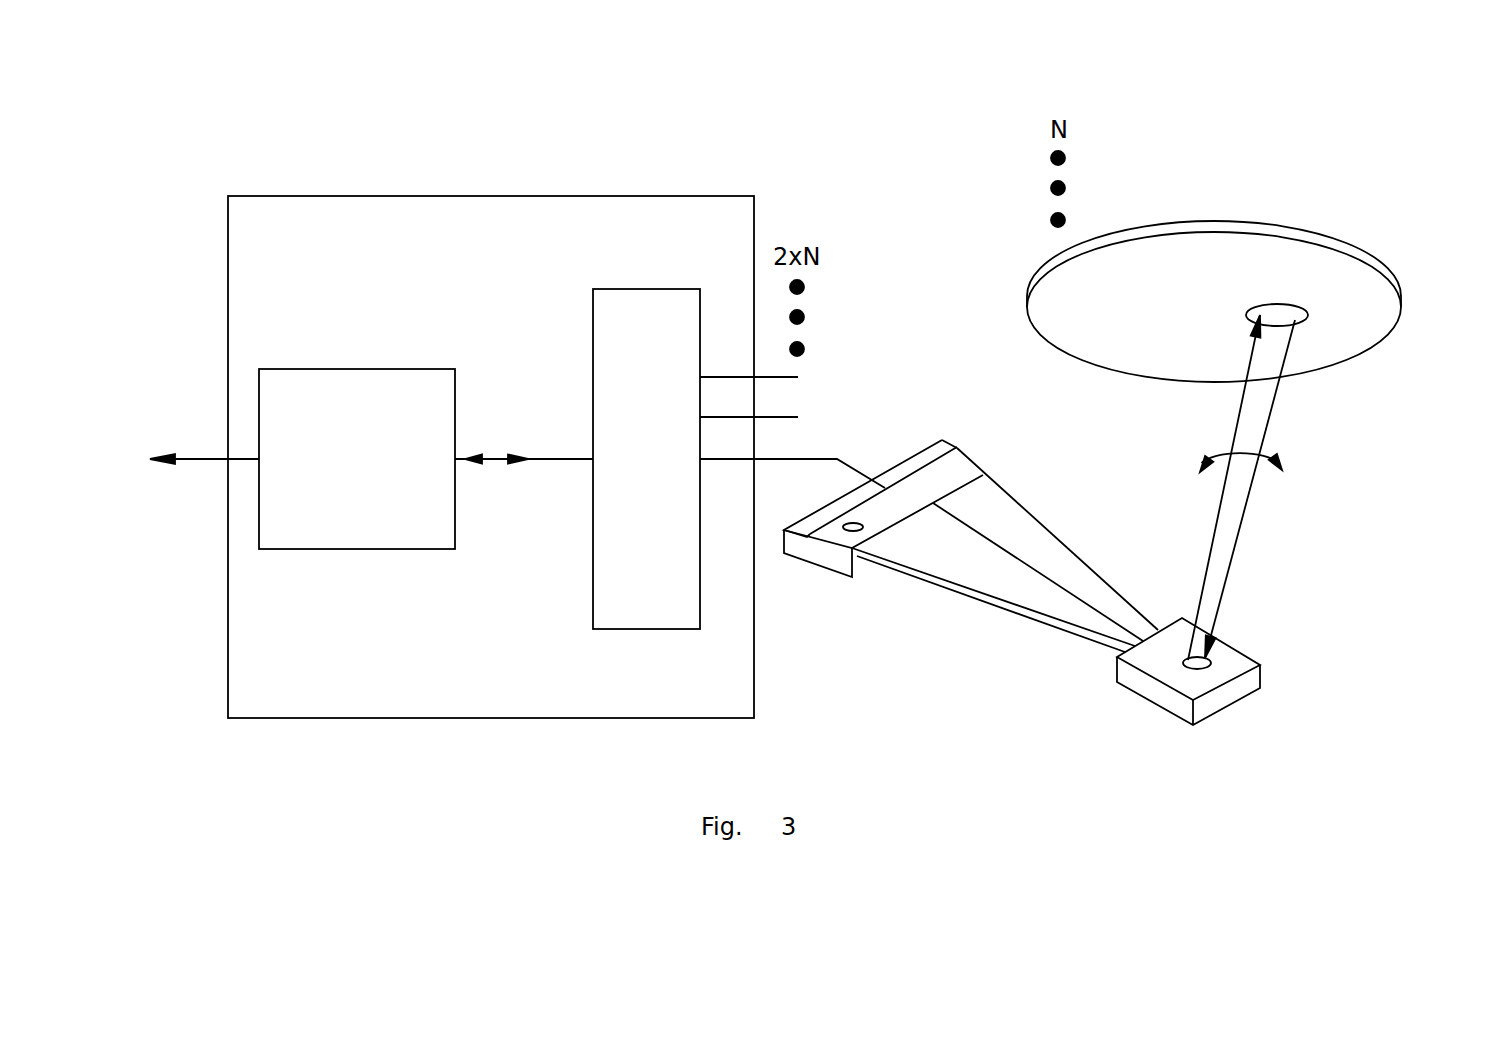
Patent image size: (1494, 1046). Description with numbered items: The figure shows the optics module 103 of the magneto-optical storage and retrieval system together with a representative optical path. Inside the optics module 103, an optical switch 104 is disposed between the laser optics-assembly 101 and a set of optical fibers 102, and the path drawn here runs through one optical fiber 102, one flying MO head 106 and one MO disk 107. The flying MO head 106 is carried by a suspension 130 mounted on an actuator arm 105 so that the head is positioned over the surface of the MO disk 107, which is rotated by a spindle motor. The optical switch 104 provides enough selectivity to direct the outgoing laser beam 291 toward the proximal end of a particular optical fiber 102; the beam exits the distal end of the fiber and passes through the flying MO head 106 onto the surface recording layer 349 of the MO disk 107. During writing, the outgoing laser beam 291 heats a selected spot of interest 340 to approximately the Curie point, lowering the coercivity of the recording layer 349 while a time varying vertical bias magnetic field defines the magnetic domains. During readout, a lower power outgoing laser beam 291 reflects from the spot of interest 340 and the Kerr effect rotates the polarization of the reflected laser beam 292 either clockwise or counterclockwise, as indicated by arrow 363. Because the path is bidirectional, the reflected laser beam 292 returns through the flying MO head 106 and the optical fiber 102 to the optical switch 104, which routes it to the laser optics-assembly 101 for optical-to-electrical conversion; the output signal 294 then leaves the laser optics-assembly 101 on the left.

The laser optics-assembly 101 is at (343, 369).
The optical fiber 102 is at (852, 467).
The optics module 103 is at (591, 196).
The optical switch 104 is at (634, 289).
The actuator arm 105 is at (822, 565).
The flying MO head 106 is at (1262, 675).
The MO disk 107 is at (1022, 268).
The suspension 130 is at (958, 592).
The outgoing laser beam 291 is at (518, 463).
The reflected laser beam 292 is at (467, 455).
The output to host 294 is at (162, 457).
The spot of interest 340 is at (1300, 317).
The surface recording layer 349 is at (1230, 257).
The arrow 363 is at (1278, 447).